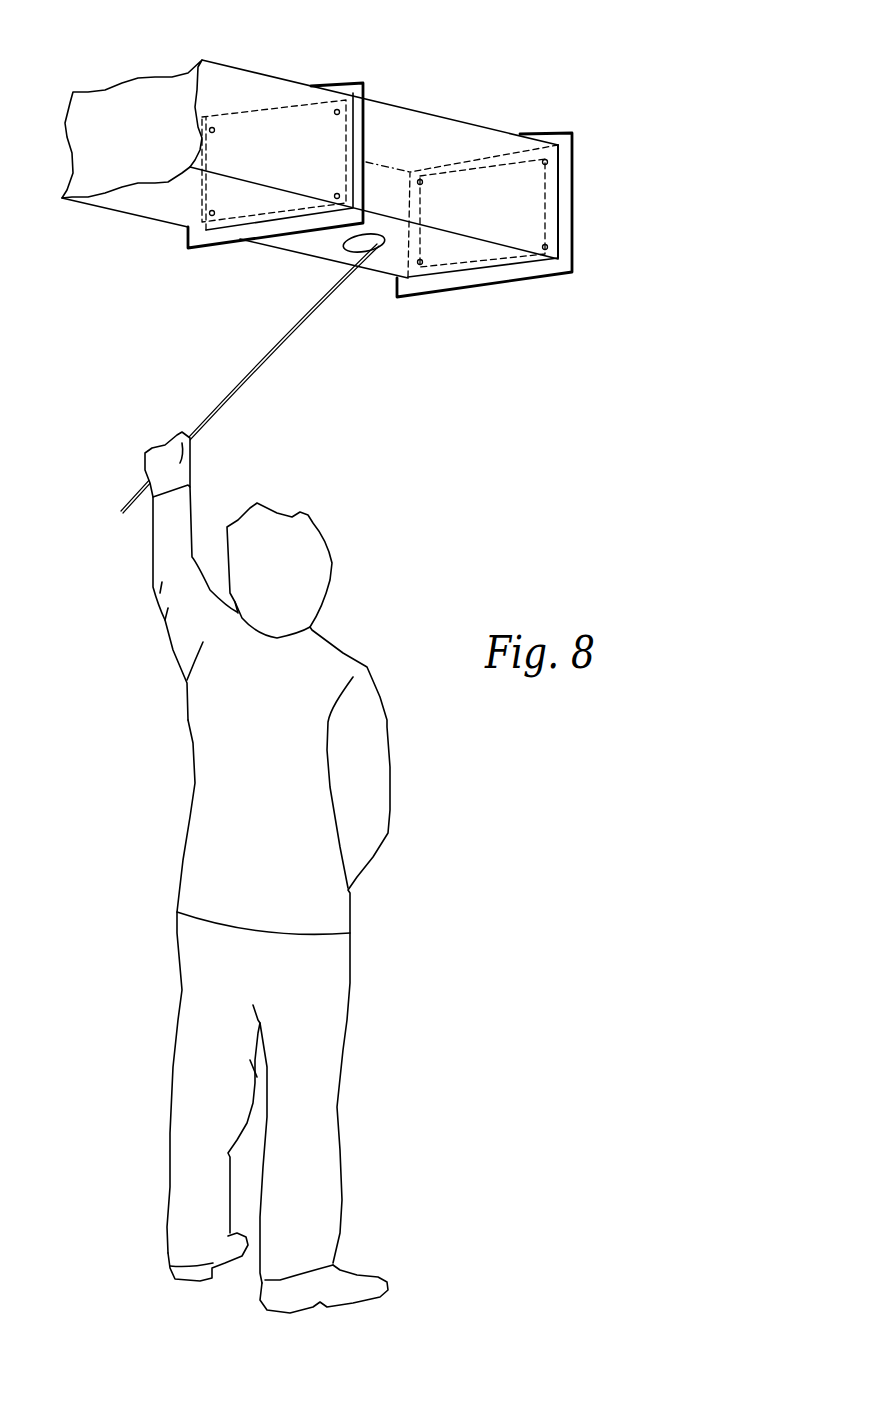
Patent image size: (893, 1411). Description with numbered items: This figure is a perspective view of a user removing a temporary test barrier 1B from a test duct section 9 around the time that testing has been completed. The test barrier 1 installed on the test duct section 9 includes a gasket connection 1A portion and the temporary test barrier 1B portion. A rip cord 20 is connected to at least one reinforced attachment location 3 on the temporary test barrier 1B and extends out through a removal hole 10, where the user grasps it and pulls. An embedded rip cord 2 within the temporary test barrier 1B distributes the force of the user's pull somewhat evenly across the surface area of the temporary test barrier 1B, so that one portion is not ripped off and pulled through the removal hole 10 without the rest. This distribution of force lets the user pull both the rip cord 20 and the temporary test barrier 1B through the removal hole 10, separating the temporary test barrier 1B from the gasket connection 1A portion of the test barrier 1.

The test barrier 1 is at (328, 67).
The test duct section 9 is at (445, 117).
The gasket connection 1A is at (571, 133).
The temporary test barrier 1B is at (512, 223).
The embedded rip cord 2 is at (546, 199).
The reinforced attachment location 3 is at (552, 165).
The removal hole 10 is at (383, 253).
The rip cord 20 is at (218, 390).